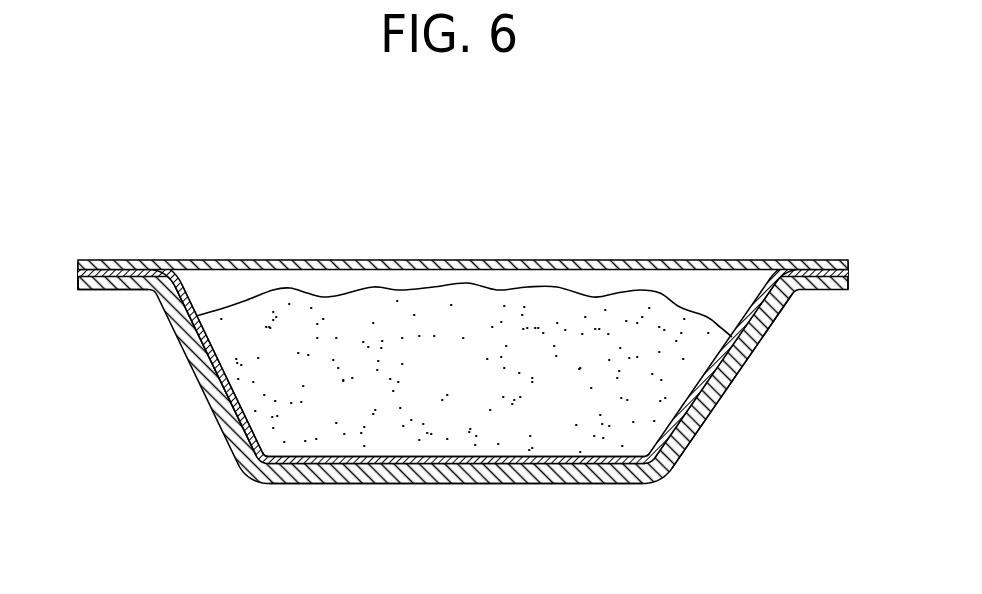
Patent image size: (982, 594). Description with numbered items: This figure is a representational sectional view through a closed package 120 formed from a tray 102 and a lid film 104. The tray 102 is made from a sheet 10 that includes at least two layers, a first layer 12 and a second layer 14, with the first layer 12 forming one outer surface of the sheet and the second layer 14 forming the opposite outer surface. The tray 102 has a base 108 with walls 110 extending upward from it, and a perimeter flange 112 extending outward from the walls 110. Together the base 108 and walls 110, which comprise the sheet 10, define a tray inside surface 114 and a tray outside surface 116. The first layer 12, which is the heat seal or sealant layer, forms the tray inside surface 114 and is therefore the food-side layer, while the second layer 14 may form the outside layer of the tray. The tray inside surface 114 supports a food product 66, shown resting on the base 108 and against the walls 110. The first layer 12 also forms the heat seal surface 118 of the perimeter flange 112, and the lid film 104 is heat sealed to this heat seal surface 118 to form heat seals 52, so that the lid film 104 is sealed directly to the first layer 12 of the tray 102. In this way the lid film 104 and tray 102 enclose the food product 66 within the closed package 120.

The sheet 10 is at (452, 362).
The first layer 12 is at (182, 304).
The second layer 14 is at (182, 348).
The heat seal 52 is at (109, 250).
The food product 66 is at (433, 381).
The tray 102 is at (201, 410).
The lid film 104 is at (590, 259).
The base 108 is at (521, 485).
The wall 110 is at (734, 381).
The perimeter flange 112 is at (78, 291).
The tray inside surface 114 is at (690, 407).
The tray outside surface 116 is at (696, 437).
The heat seal surface 118 is at (79, 260).
The closed package 120 is at (463, 218).